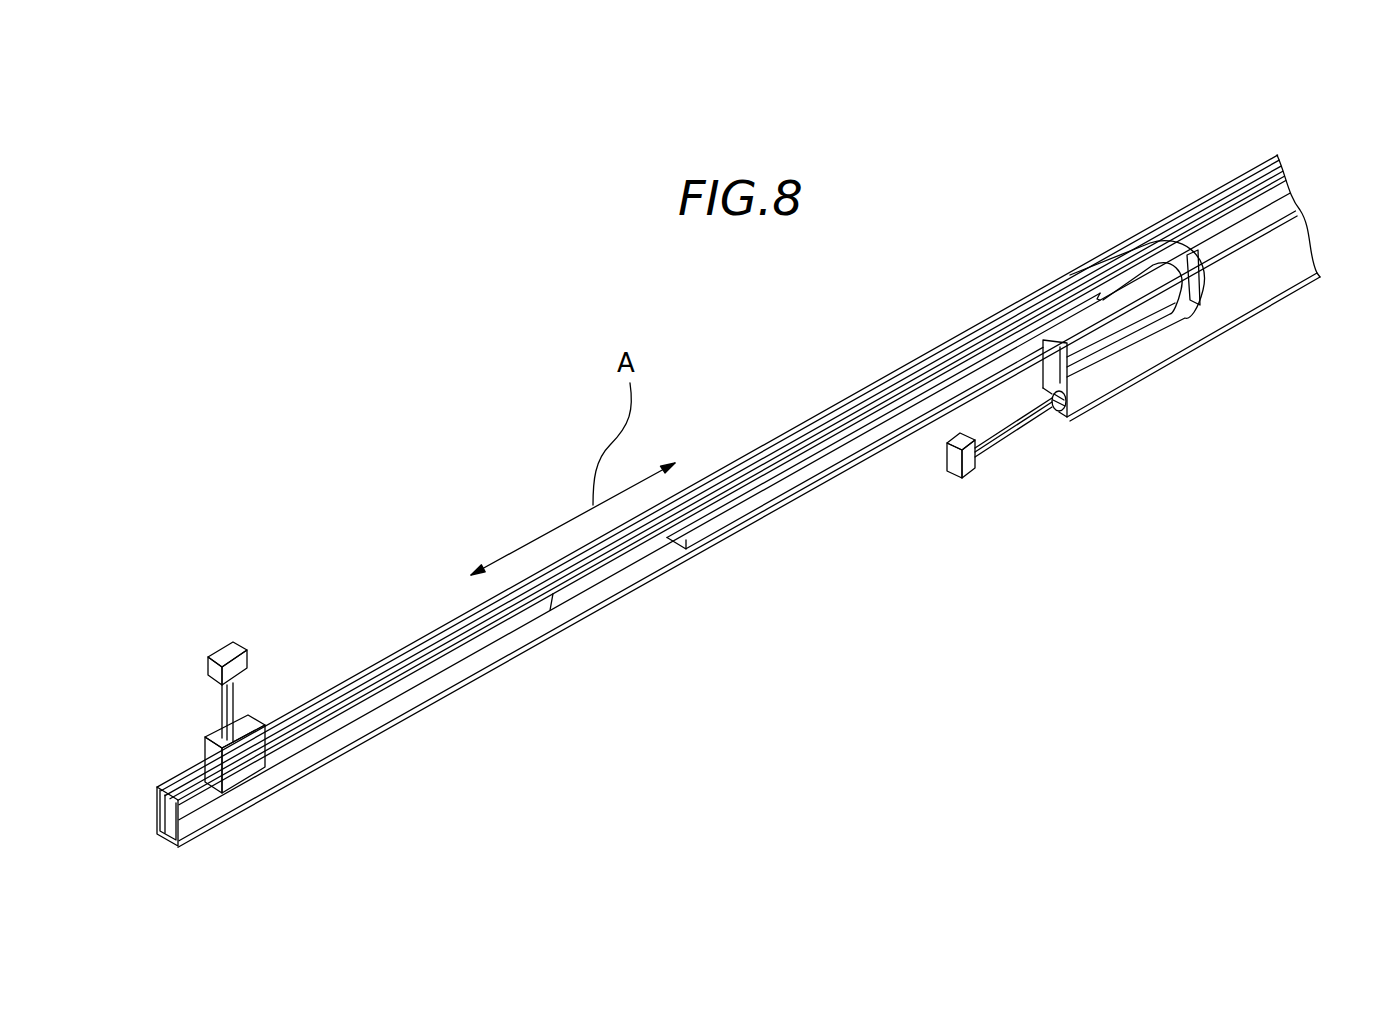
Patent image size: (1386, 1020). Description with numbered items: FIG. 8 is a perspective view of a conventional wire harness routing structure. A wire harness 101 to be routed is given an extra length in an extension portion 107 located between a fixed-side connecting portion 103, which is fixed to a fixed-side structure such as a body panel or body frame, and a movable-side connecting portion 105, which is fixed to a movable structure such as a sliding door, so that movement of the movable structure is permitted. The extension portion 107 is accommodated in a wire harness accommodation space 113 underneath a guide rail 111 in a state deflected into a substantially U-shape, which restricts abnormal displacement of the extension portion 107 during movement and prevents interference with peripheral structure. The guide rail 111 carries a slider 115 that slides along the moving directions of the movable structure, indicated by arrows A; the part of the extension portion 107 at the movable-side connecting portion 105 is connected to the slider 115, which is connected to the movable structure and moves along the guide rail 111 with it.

The guide rail 111 is at (1200, 188).
The wire harness accommodation space 113 is at (1234, 278).
The extension portion 107 is at (783, 470).
The wire harness 101 is at (1085, 388).
The fixed-side connecting portion 103 is at (966, 450).
The movable-side connecting portion 105 is at (243, 665).
The slider 115 is at (205, 742).